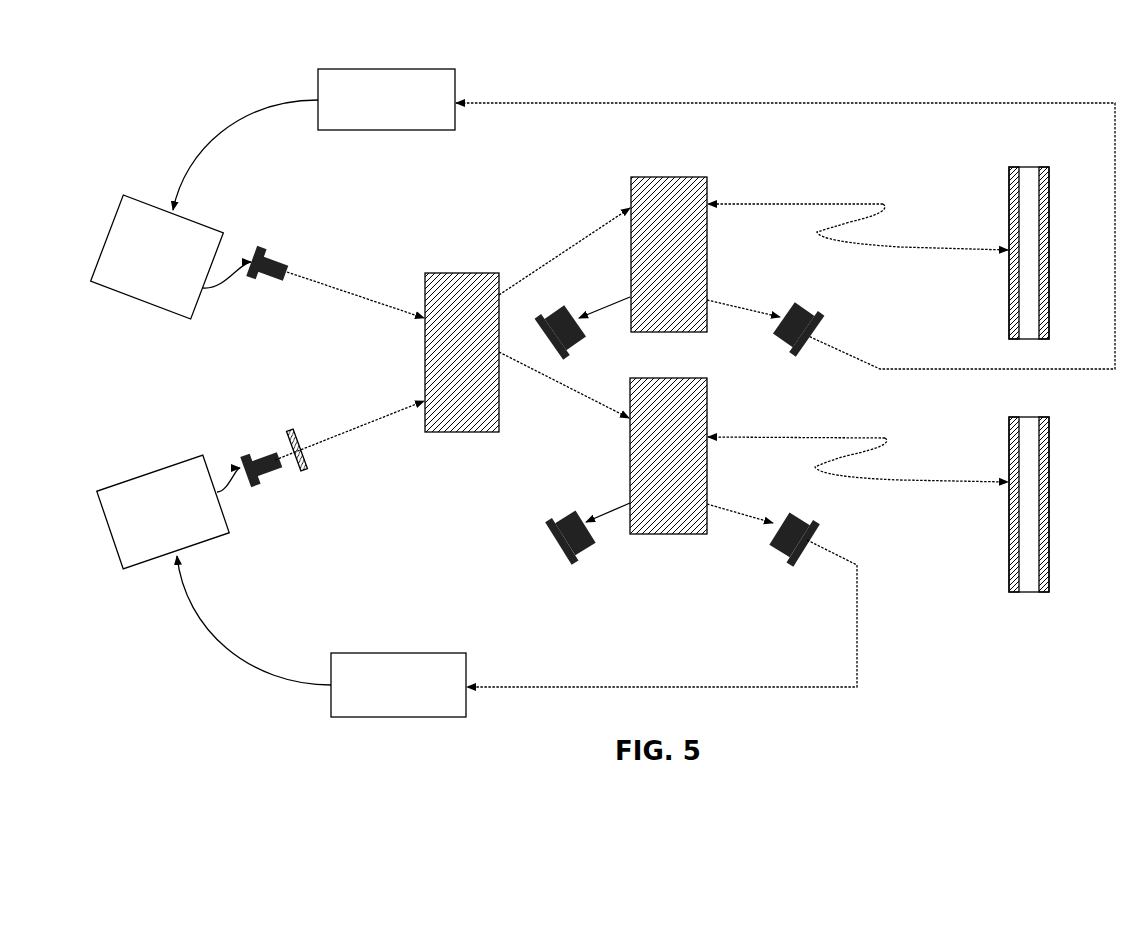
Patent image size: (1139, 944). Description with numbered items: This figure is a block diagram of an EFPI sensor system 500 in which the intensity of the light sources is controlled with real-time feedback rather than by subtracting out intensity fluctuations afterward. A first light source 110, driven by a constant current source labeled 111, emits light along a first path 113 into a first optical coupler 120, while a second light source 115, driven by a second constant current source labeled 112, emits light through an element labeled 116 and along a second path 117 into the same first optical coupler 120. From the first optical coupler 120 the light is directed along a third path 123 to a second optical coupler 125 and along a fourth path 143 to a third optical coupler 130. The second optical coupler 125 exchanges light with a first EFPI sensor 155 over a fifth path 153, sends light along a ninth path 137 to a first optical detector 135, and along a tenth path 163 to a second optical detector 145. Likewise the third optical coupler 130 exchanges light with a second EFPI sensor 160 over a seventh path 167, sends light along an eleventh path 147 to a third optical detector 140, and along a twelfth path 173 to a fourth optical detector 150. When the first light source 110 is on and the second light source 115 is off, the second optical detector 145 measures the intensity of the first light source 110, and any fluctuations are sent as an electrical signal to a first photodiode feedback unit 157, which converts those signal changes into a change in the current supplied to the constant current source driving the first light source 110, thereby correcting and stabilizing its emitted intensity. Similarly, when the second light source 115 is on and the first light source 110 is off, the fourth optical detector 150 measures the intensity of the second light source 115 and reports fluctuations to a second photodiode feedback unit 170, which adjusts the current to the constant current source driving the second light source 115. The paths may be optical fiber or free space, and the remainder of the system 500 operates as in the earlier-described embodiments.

The EFPI sensor system 500 is at (686, 95).
The first photodiode feedback unit 157 is at (413, 135).
The first light source 110 is at (265, 243).
The constant current source 111 is at (140, 310).
The first path 113 is at (367, 300).
The constant current source 112 is at (150, 475).
The second light source 115 is at (242, 448).
The filter 116 is at (293, 470).
The second path 117 is at (390, 415).
The first optical coupler 120 is at (463, 273).
The second optical coupler 125 is at (668, 177).
The third optical coupler 130 is at (670, 535).
The third path 123 is at (580, 240).
The fourth path 143 is at (597, 403).
The first optical detector 135 is at (557, 307).
The ninth path 137 is at (600, 308).
The second optical detector 145 is at (800, 302).
The tenth path 163 is at (760, 312).
The third optical detector 140 is at (558, 535).
The eleventh path 147 is at (626, 508).
The fourth optical detector 150 is at (780, 550).
The twelfth path 173 is at (727, 510).
The second photodiode feedback unit 170 is at (435, 653).
The fifth path 153 is at (828, 202).
The first EFPI sensor 155 is at (1050, 250).
The seventh path 167 is at (808, 438).
The second EFPI sensor 160 is at (1048, 502).